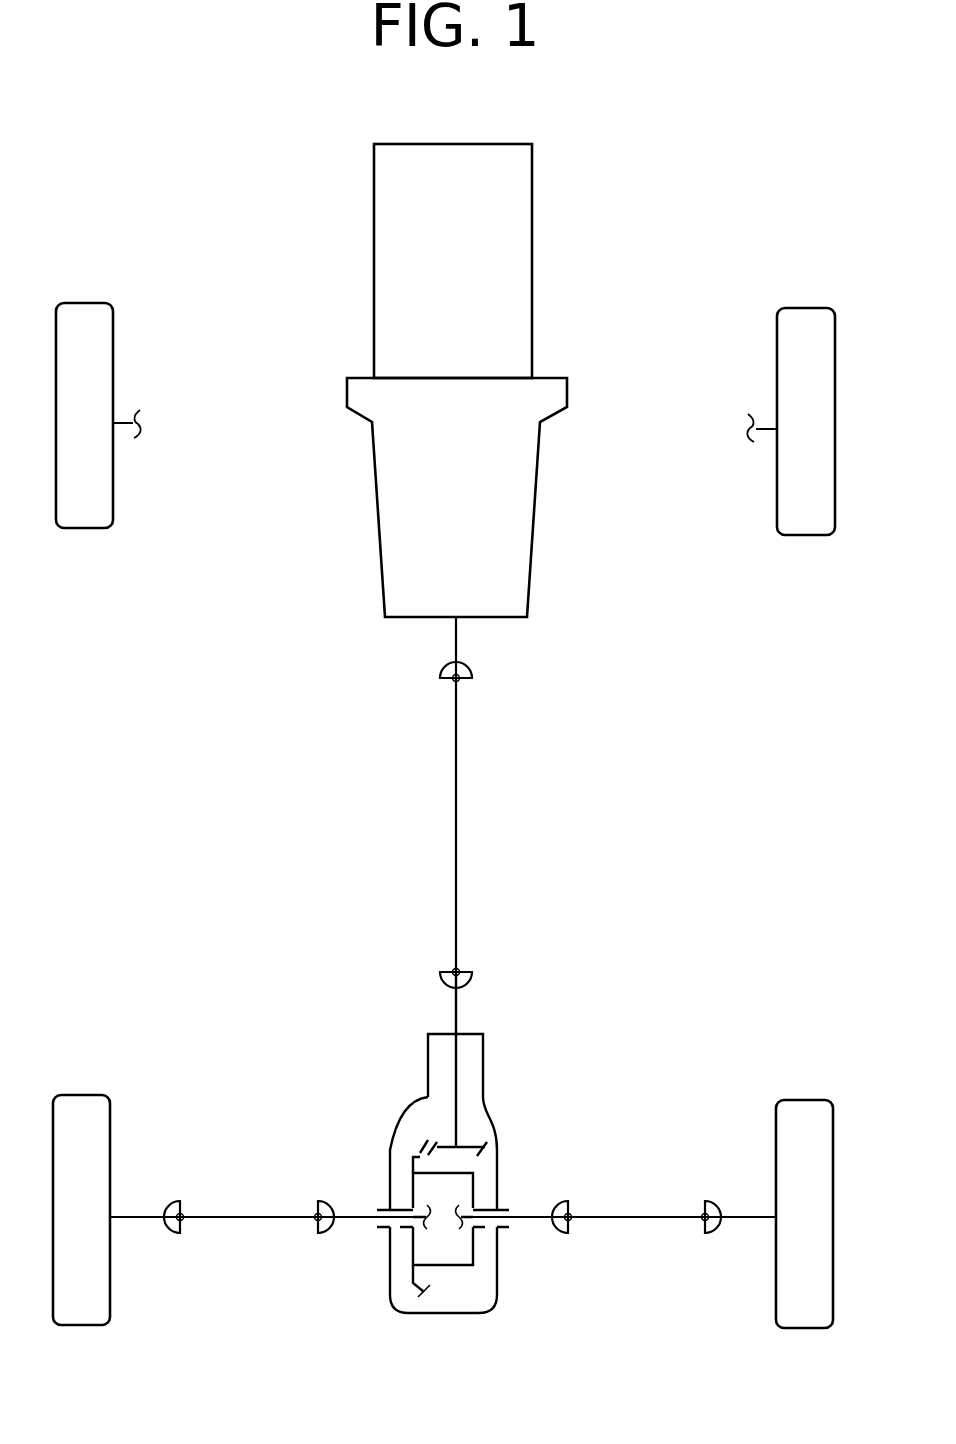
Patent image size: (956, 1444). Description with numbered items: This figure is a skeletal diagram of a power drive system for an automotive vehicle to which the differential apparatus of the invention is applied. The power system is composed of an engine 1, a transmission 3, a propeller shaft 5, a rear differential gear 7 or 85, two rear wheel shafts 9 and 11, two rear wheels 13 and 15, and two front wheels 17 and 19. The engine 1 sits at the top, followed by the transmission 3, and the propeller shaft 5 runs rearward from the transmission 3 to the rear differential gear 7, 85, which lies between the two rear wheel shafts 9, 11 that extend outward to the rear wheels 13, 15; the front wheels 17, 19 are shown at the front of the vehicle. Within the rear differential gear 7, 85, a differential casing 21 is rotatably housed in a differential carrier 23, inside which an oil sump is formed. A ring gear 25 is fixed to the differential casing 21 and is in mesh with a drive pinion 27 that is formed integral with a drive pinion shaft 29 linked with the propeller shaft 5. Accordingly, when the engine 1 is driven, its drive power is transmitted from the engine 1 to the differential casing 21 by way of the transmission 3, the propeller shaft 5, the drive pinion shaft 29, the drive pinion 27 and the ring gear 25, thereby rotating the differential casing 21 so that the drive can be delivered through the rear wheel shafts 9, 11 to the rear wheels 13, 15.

The engine 1 is at (464, 144).
The transmission 3 is at (535, 503).
The propeller shaft 5 is at (456, 807).
The rear differential gear 7 is at (356, 1128).
The rear differential gear 85 is at (472, 1172).
The rear wheel shaft 9 is at (279, 1205).
The rear wheel shaft 11 is at (608, 1205).
The rear wheel 13 is at (85, 1095).
The rear wheel 15 is at (800, 1100).
The front wheel 17 is at (88, 303).
The front wheel 19 is at (800, 308).
The differential casing 21 is at (460, 1265).
The differential carrier 23 is at (465, 1034).
The ring gear 25 is at (424, 1292).
The drive pinion 27 is at (488, 1150).
The drive pinion shaft 29 is at (457, 1072).